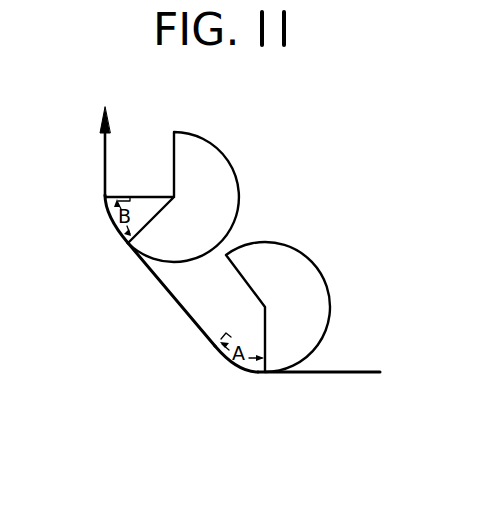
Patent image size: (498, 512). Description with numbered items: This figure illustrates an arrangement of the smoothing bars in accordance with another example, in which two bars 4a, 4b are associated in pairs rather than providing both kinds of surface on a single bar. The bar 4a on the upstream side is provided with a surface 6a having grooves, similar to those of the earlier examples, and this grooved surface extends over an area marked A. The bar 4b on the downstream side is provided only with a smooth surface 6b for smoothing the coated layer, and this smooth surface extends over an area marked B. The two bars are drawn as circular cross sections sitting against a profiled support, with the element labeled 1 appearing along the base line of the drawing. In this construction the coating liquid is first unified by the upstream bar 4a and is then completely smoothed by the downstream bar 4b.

The base line 1 is at (338, 413).
The bar 4a is at (318, 311).
The bar 4b is at (228, 184).
The surface having grooves 6a is at (248, 374).
The smooth surface 6b is at (112, 210).